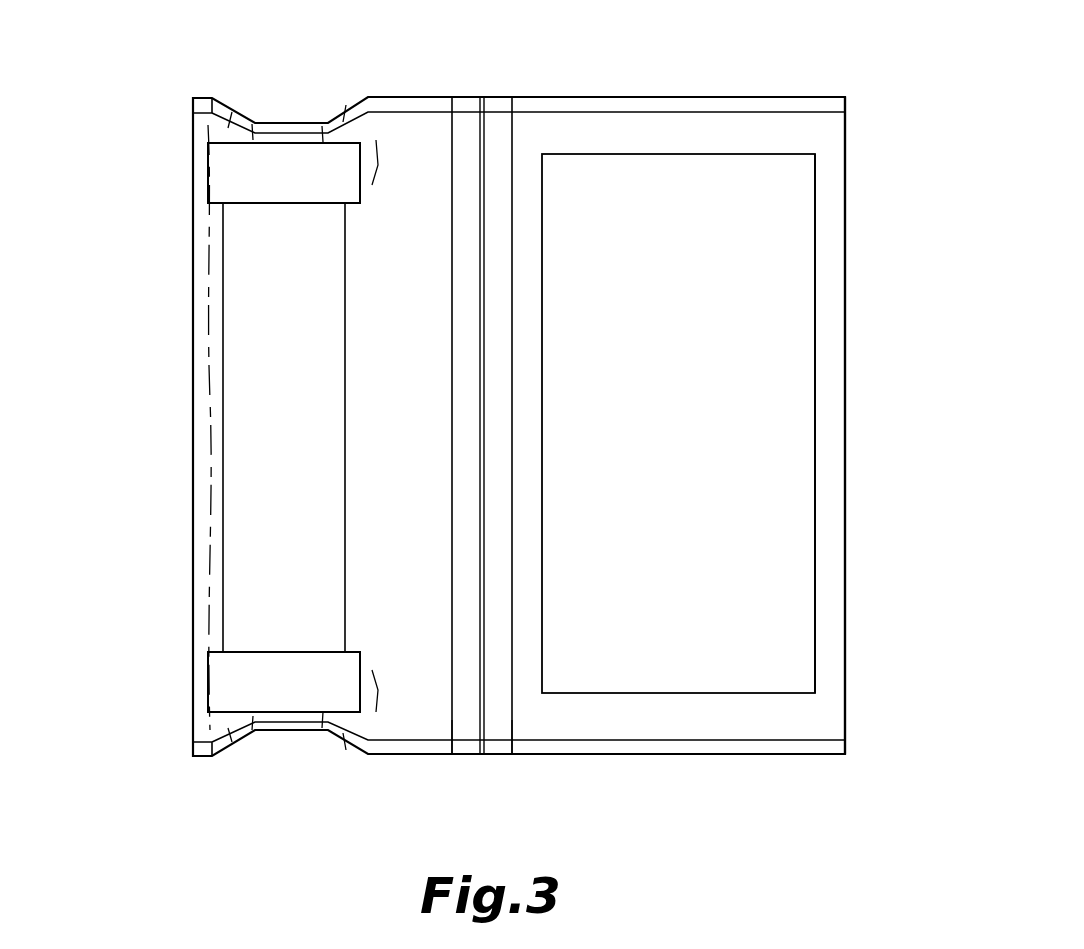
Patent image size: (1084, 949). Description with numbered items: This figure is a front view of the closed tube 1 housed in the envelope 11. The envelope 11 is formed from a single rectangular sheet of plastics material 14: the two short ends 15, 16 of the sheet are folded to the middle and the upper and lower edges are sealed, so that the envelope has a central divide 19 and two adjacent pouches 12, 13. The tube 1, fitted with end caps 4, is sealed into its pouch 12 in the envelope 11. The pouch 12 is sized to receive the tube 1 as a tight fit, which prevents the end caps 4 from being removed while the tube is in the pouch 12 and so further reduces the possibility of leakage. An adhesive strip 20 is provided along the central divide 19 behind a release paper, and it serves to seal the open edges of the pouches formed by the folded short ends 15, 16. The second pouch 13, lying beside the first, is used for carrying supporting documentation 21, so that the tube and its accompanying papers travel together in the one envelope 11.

The tube 1 is at (268, 332).
The end caps 4 is at (268, 173).
The envelope 11 is at (724, 748).
The pouch 12 is at (208, 403).
The second pouch 13 is at (830, 386).
The rectangular sheet of plastics material 14 is at (845, 202).
The short end of the plastics sheet 15 is at (483, 148).
The short end of the plastics sheet 16 is at (486, 140).
The central divide 19 is at (478, 692).
The adhesive strip 20 is at (497, 723).
The supporting documentation 21 is at (712, 578).